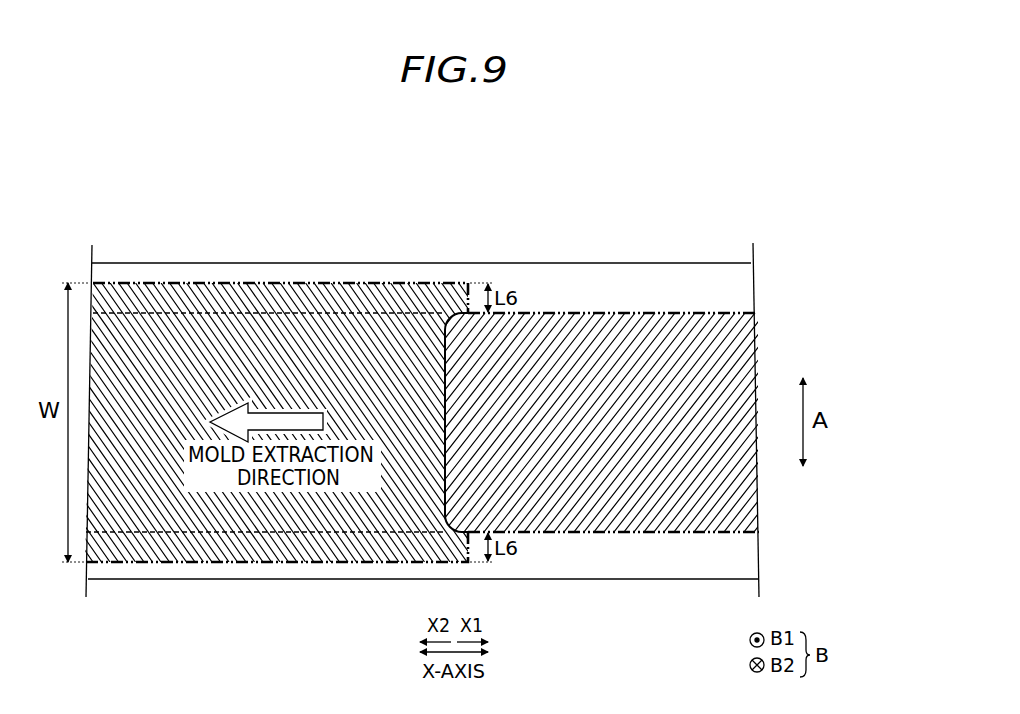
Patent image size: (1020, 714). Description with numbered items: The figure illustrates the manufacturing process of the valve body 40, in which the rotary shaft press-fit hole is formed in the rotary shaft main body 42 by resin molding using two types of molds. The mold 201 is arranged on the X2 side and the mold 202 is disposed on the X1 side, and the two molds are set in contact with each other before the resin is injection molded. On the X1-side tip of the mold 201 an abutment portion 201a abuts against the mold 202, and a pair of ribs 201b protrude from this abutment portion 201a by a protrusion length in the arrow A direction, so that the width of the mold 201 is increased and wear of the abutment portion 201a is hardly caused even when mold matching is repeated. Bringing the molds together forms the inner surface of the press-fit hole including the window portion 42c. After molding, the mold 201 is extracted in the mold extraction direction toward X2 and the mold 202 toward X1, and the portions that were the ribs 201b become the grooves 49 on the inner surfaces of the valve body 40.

The valve body 40 is at (442, 372).
The rotary shaft main body 42 is at (715, 280).
The window portion 42c is at (545, 316).
The grooves 49 is at (337, 290).
The mold 201 is at (150, 342).
The abutment portion 201a is at (430, 425).
The ribs 201b is at (228, 300).
The mold 202 is at (678, 328).